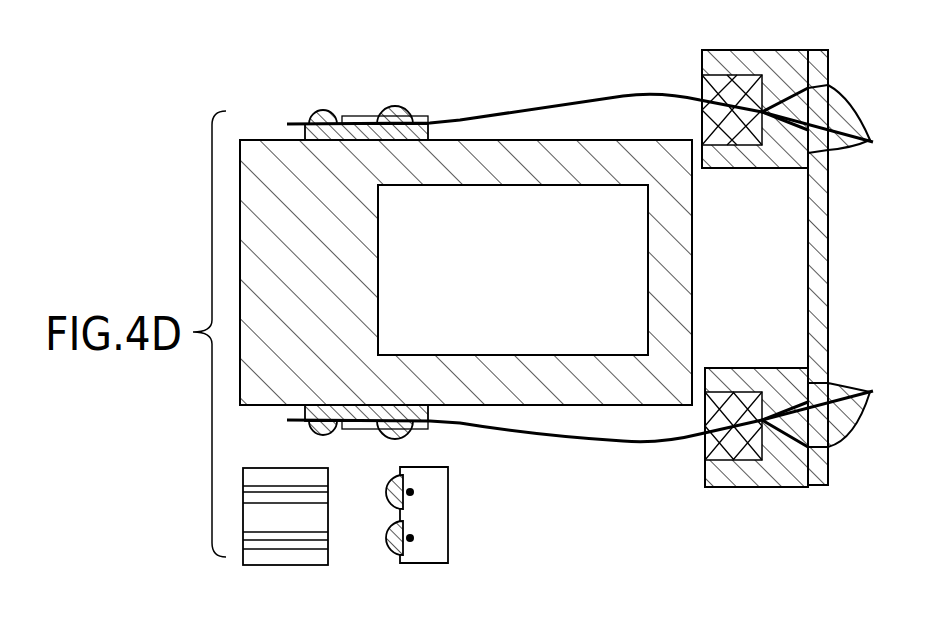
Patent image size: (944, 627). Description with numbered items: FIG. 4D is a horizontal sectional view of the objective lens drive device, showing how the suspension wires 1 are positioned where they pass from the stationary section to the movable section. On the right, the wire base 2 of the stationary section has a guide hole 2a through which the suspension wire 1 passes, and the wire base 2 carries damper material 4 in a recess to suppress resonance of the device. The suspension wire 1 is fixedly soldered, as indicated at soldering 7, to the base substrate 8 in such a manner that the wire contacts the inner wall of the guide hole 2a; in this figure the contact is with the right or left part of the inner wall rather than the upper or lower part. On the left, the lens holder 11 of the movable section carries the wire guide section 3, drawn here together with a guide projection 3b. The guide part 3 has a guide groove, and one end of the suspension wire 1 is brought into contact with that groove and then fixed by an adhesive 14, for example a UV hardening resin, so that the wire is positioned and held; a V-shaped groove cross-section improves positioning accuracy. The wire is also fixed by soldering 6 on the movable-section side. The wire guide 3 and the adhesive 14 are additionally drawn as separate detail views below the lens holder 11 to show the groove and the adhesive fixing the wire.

The suspension wire 1 is at (588, 97).
The wire base 2 is at (786, 53).
The guide hole of the wire base 2a is at (788, 432).
The wire guide section 3 is at (428, 122).
The clamp projection 3b is at (365, 115).
The damper material 4 is at (703, 80).
The soldering 6 is at (323, 108).
The soldering 7 is at (838, 108).
The base substrate 8 is at (827, 212).
The lens holder 11 is at (478, 138).
The adhesive 14 is at (395, 108).